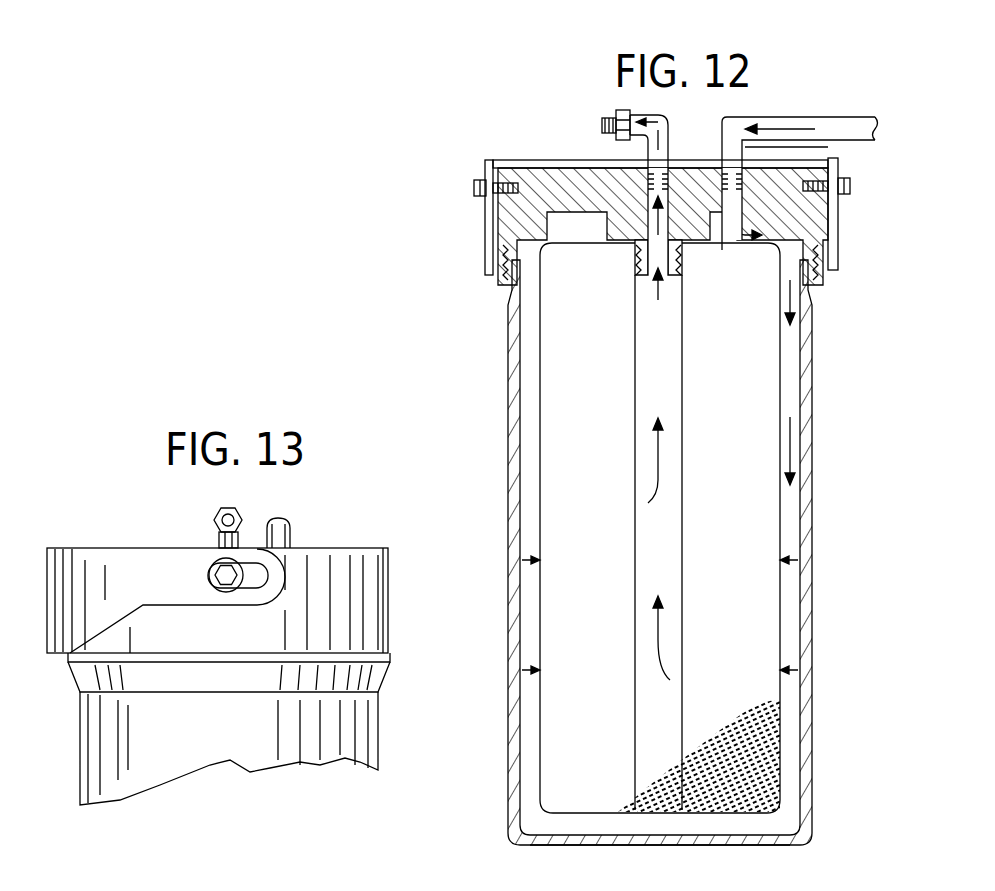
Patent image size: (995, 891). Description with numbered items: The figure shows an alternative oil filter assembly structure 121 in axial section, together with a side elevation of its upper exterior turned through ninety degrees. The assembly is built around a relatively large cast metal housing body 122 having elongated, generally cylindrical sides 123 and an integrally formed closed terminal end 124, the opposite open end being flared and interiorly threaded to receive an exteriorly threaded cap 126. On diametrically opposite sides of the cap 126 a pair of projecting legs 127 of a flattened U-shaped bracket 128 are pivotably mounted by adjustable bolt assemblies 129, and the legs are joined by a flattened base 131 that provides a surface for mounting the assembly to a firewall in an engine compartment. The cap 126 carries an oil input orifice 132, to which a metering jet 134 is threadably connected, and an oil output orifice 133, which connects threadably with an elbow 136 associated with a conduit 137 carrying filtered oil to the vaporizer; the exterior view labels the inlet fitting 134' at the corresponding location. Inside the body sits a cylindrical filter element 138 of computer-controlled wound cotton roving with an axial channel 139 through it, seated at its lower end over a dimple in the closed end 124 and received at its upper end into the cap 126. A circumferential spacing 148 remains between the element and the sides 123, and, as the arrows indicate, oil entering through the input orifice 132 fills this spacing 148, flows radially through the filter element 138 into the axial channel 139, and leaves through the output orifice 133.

In FIG. 12, the filter assembly structure 121 is at (452, 72).
In FIG. 13, the filter assembly structure 121 is at (68, 703).
In FIG. 12, the housing body 122 is at (828, 378).
In FIG. 13, the housing body 122 is at (70, 752).
In FIG. 12, the cylindrically configured sides 123 is at (812, 580).
In FIG. 12, the closed terminal end 124 is at (722, 845).
In FIG. 12, the cap 126 is at (548, 168).
In FIG. 12, the projecting legs 127 is at (487, 210).
In FIG. 13, the projecting legs 127 is at (150, 555).
In FIG. 12, the flattened U-shaped bracket 128 is at (672, 160).
In FIG. 13, the flattened U-shaped bracket 128 is at (97, 540).
In FIG. 12, the adjustable bolt assemblies 129 is at (478, 185).
In FIG. 13, the adjustable bolt assemblies 129 is at (210, 572).
In FIG. 13, the flattened base 131 is at (45, 560).
In FIG. 12, the oil input orifice 132 is at (722, 140).
In FIG. 12, the oil output orifice 133 is at (645, 170).
In FIG. 12, the metering jet 134 is at (792, 102).
In FIG. 13, the inlet fitting 134' is at (324, 514).
In FIG. 12, the elbow 136 is at (605, 112).
In FIG. 13, the elbow 136 is at (240, 512).
In FIG. 12, the conduit 137 is at (843, 128).
In FIG. 12, the filter element 138 is at (755, 622).
In FIG. 12, the axial channel 139 is at (670, 705).
In FIG. 12, the circumferential spacing 148 is at (786, 706).